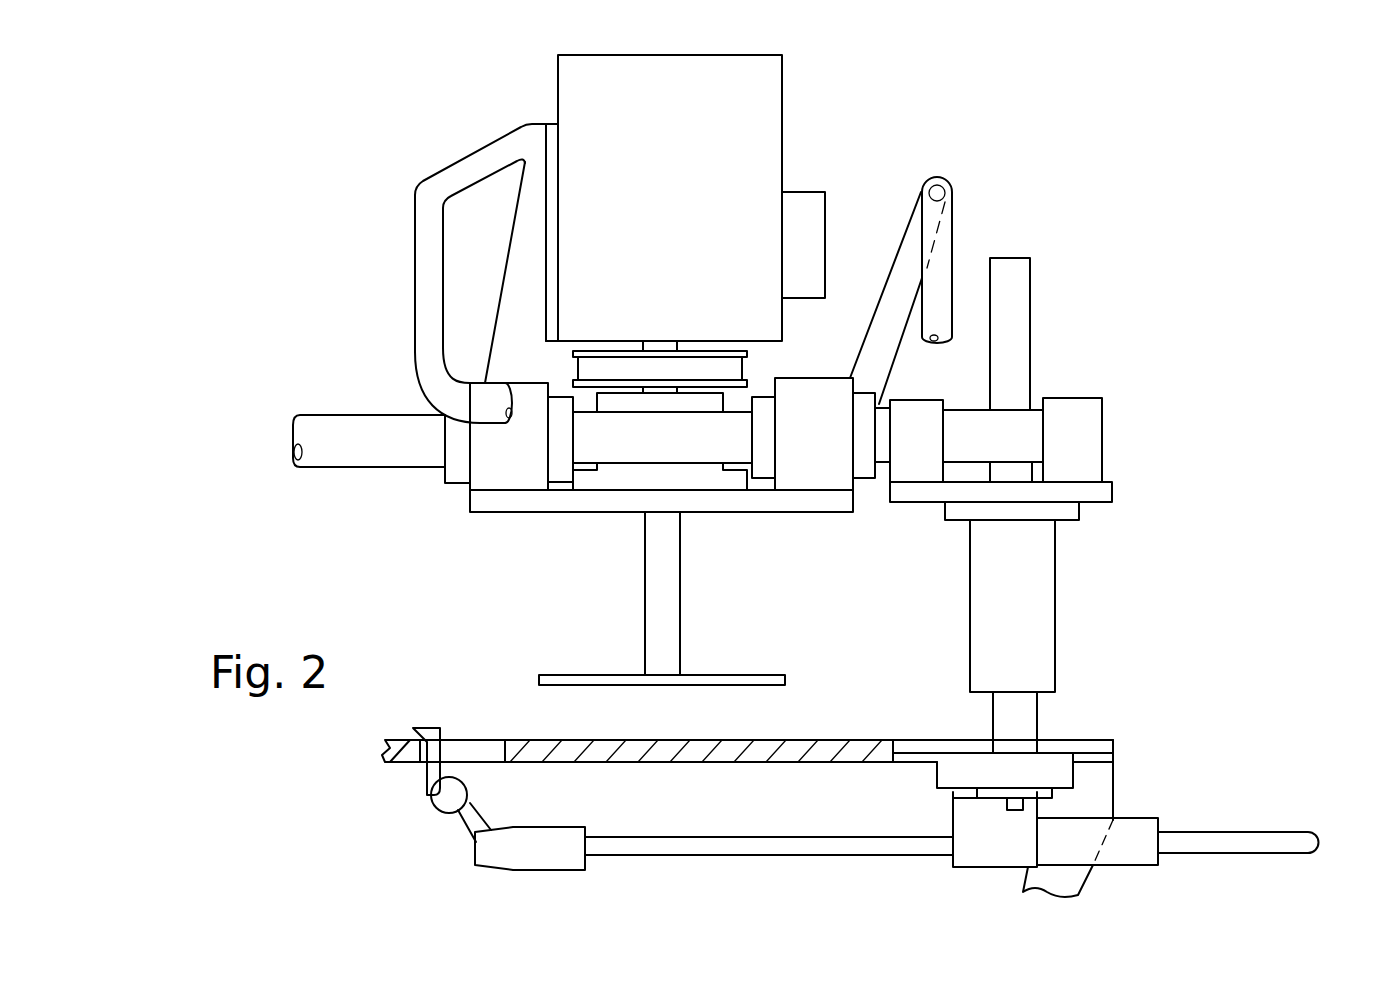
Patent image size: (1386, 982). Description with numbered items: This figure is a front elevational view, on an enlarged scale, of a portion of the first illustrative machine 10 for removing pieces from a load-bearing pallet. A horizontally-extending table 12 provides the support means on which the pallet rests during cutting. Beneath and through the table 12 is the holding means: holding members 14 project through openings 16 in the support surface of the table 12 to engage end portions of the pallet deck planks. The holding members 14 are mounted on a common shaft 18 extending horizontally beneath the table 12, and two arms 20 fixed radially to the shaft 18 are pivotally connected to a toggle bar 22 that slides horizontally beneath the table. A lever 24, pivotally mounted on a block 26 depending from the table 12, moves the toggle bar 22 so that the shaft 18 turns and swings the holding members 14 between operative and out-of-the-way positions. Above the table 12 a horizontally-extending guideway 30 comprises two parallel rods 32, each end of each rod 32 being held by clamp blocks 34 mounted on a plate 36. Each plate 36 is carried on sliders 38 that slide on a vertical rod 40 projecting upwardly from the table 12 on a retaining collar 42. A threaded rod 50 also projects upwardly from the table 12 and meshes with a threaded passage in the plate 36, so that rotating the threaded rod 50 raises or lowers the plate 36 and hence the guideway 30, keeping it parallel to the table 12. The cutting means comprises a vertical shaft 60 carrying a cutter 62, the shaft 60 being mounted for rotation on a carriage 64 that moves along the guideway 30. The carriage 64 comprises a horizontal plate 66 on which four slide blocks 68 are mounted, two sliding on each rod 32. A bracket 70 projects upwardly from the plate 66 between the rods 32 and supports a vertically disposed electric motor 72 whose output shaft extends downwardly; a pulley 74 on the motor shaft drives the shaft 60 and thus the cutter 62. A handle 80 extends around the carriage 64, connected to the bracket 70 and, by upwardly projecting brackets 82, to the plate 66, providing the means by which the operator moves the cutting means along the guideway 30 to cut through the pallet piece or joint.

The machine 10 is at (1032, 228).
The table 12 is at (852, 740).
The holding member 14 is at (432, 728).
The opening 16 is at (497, 746).
The shaft 18 is at (432, 801).
The arm 20 is at (462, 820).
The toggle bar 22 is at (565, 832).
The lever 24 is at (1250, 832).
The block 26 is at (975, 822).
The guideway 30 is at (388, 402).
The rod 32 is at (320, 455).
The clamp block 34 is at (920, 407).
The plate 36 is at (1105, 497).
The slider 38 is at (1050, 608).
The vertical rod 40 is at (1025, 722).
The retaining collar 42 is at (1062, 773).
The threaded rod 50 is at (1020, 283).
The shaft 60 is at (656, 599).
The cutter 62 is at (556, 677).
The carriage 64 is at (488, 519).
The plate 66 is at (762, 497).
The slide block 68 is at (482, 458).
The bracket 70 is at (548, 258).
The motor 72 is at (686, 217).
The pulley 74 is at (712, 350).
The handle 80 is at (418, 203).
The bracket 82 is at (906, 263).